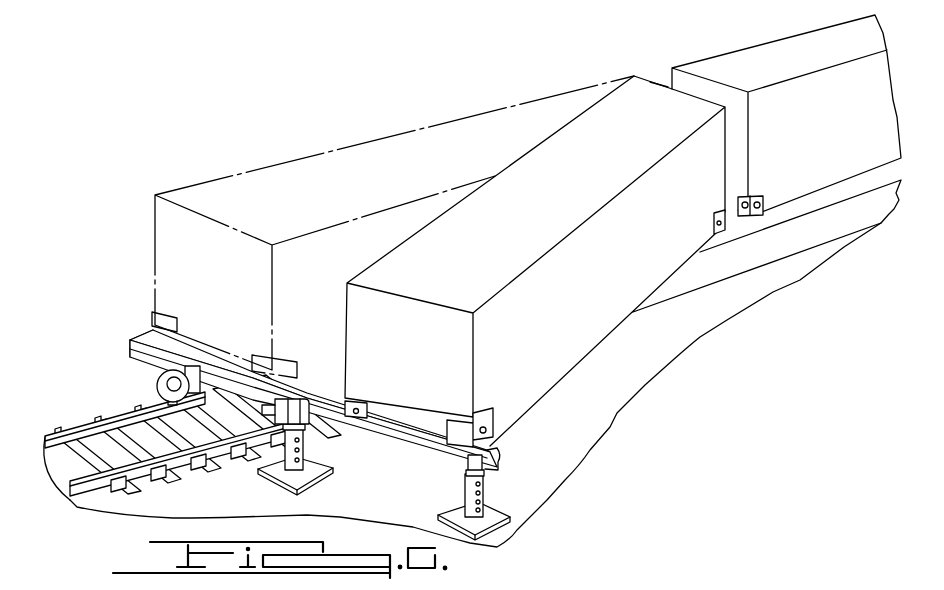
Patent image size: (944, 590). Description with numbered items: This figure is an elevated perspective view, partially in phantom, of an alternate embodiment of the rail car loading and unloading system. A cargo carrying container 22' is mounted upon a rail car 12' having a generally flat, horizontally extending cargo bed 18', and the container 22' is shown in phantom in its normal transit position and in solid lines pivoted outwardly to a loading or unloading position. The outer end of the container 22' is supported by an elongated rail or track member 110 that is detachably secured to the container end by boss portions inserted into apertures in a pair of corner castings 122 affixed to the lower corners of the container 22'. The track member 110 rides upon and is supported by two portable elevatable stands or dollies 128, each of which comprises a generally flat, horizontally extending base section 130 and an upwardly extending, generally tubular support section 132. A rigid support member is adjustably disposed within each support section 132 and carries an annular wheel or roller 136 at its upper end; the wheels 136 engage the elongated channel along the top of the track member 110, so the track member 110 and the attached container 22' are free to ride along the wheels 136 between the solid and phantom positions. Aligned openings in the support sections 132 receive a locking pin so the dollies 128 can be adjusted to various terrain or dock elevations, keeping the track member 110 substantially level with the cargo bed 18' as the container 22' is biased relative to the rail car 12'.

The rail car 12' is at (474, 313).
The cargo bed 18' is at (121, 376).
The cargo carrying container 22' is at (535, 218).
The track member 110 is at (401, 423).
The corner castings 122 is at (362, 397).
The portable elevatable stands or dollies 128 is at (271, 456).
The base sections 130 is at (467, 510).
The support sections 132 is at (458, 477).
The wheel or roller 136 is at (310, 398).